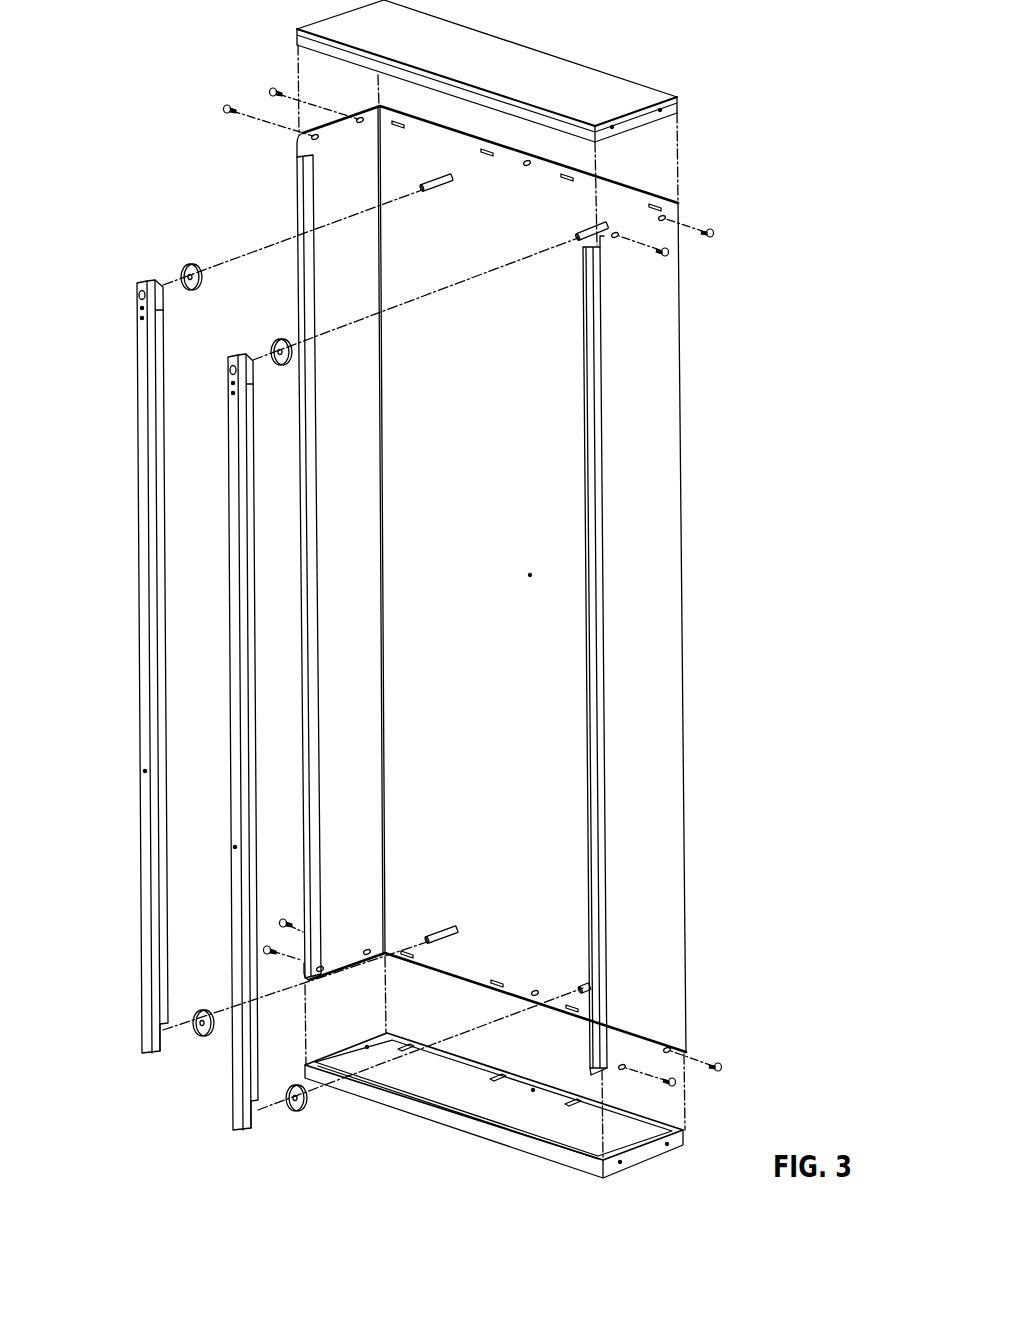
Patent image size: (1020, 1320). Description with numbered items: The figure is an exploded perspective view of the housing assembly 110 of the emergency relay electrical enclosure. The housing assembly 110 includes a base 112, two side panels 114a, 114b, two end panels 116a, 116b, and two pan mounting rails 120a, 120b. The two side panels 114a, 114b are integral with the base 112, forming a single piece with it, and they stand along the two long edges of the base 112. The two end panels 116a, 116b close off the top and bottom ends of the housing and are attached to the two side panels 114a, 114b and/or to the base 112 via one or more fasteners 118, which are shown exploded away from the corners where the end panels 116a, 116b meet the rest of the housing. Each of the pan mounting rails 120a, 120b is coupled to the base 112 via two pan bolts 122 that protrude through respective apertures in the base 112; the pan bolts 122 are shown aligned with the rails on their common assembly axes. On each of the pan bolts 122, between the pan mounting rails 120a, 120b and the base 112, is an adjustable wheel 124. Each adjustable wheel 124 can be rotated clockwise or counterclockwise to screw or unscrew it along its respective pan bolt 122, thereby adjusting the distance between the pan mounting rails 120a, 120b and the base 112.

The housing assembly 110 is at (683, 32).
The base 112 is at (563, 710).
The side panel 114a is at (326, 180).
The side panel 114b is at (672, 508).
The end panel 116a is at (571, 72).
The end panel 116b is at (452, 1107).
The fasteners 118 is at (272, 88).
The pan mounting rail 120a is at (146, 840).
The pan mounting rail 120b is at (236, 687).
The pan bolts 122 is at (440, 193).
The adjustable wheel 124 is at (190, 264).